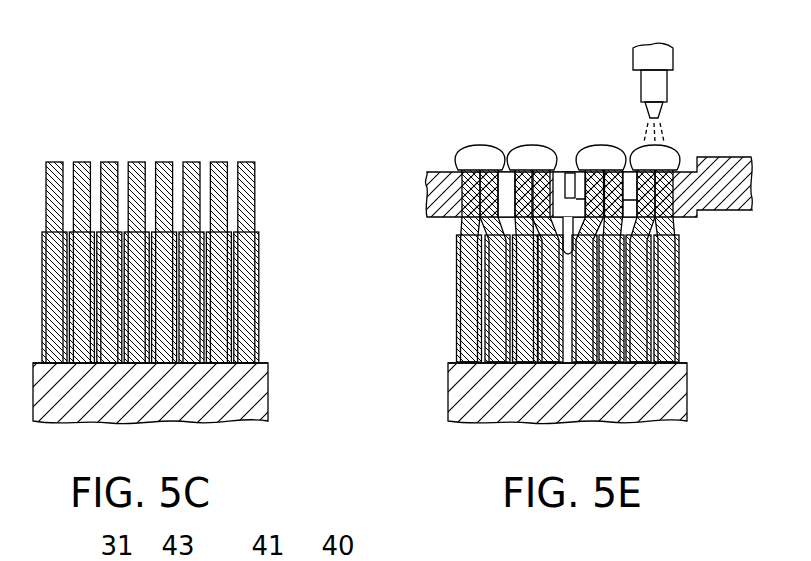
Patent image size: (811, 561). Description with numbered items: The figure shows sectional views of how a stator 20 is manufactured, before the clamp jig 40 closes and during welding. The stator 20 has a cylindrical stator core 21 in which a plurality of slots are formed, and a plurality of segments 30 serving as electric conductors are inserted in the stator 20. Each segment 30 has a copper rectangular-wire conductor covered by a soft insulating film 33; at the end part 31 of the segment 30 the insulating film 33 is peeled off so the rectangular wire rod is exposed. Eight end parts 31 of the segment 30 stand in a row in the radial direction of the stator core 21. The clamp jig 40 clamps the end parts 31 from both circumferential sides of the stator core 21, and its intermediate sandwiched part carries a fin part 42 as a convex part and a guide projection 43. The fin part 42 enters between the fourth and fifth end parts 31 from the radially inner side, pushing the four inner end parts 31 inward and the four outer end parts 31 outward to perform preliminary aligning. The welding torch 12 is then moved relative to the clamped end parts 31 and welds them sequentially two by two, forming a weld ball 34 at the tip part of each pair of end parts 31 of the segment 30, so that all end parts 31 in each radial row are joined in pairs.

In FIG. 5E, the welding torch 12 is at (668, 79).
In FIG. 5C, the stator 20 is at (279, 381).
In FIG. 5E, the stator 20 is at (697, 382).
In FIG. 5C, the stator core 21 is at (268, 363).
In FIG. 5E, the stator core 21 is at (688, 363).
In FIG. 5C, the segment 30 is at (195, 275).
In FIG. 5C, the end part of segment 31 is at (135, 162).
In FIG. 5E, the end part of segment 31 is at (490, 282).
In FIG. 5C, the insulating film 33 is at (183, 363).
In FIG. 5E, the weld ball 34 is at (655, 146).
In FIG. 5E, the clamp jig 40 is at (735, 148).
In FIG. 5E, the fin part 42 is at (567, 247).
In FIG. 5E, the guide projection 43 is at (577, 199).